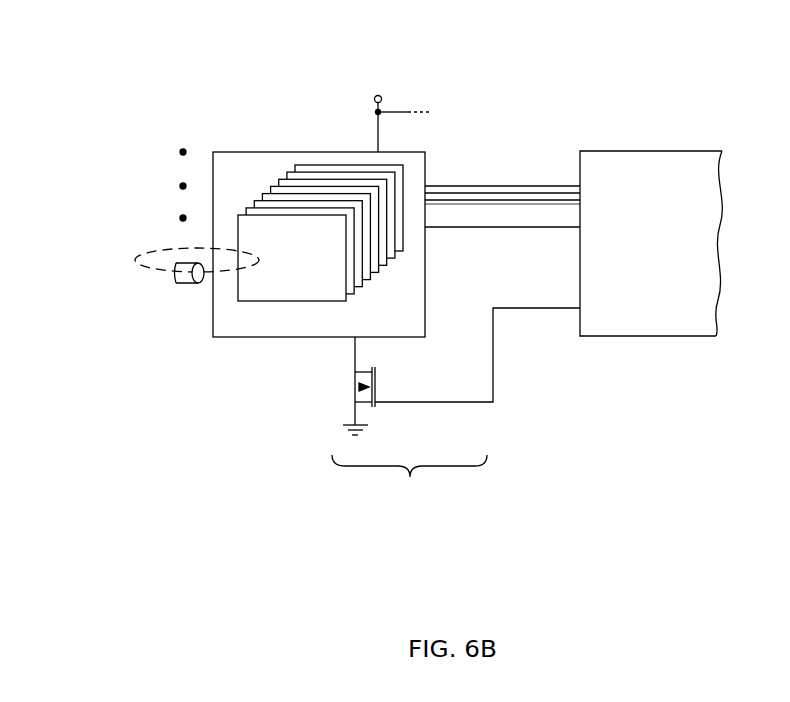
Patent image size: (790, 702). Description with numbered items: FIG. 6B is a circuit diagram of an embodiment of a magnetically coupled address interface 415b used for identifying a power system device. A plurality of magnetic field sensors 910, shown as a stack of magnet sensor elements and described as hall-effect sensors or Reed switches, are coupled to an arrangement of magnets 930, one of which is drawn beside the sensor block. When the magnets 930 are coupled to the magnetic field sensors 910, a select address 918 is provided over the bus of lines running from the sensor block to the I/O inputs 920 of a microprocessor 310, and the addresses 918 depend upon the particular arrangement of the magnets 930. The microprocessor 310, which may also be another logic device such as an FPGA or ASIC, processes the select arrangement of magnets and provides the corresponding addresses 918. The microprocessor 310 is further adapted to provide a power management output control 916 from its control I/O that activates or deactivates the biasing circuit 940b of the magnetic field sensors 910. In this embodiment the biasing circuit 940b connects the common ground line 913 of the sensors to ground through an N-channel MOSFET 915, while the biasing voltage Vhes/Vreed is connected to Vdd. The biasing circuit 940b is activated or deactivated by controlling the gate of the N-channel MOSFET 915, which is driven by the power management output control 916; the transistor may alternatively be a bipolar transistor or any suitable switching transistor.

The magnetically coupled address interface 415b is at (98, 60).
The magnetic field sensor 910 is at (280, 150).
The magnet 930 is at (197, 277).
The address 918 is at (500, 186).
The I/O[0..N] port of microprocessor 920 is at (578, 184).
The microprocessor 310 is at (640, 337).
The power management output control 916 is at (578, 308).
The COM_GND common ground line 913 is at (352, 340).
The N-channel MOSFET 915 is at (385, 396).
The biasing circuit 940b is at (409, 438).